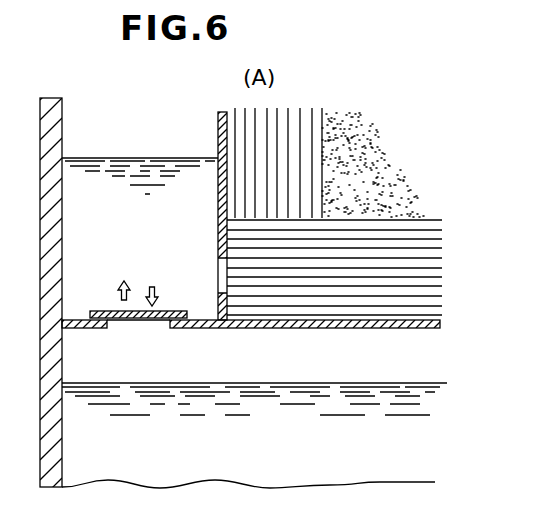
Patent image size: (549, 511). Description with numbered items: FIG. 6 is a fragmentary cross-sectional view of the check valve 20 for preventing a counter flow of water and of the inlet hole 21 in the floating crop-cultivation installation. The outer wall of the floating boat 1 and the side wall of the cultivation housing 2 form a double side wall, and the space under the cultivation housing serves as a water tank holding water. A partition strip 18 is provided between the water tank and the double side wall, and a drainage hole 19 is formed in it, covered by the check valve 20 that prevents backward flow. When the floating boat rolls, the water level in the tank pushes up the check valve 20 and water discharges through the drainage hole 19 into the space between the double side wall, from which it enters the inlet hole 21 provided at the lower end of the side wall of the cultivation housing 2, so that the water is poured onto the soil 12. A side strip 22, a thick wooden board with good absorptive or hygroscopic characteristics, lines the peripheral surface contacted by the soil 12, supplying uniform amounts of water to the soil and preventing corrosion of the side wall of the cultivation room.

The floating boat 1 is at (40, 212).
The cultivation housing 2 is at (218, 140).
The soil 12 is at (432, 196).
The partition strip 18 is at (85, 321).
The drainage hole 19 is at (157, 322).
The check valve 20 is at (177, 310).
The inlet hole 21 is at (220, 283).
The side strip 22 is at (296, 145).